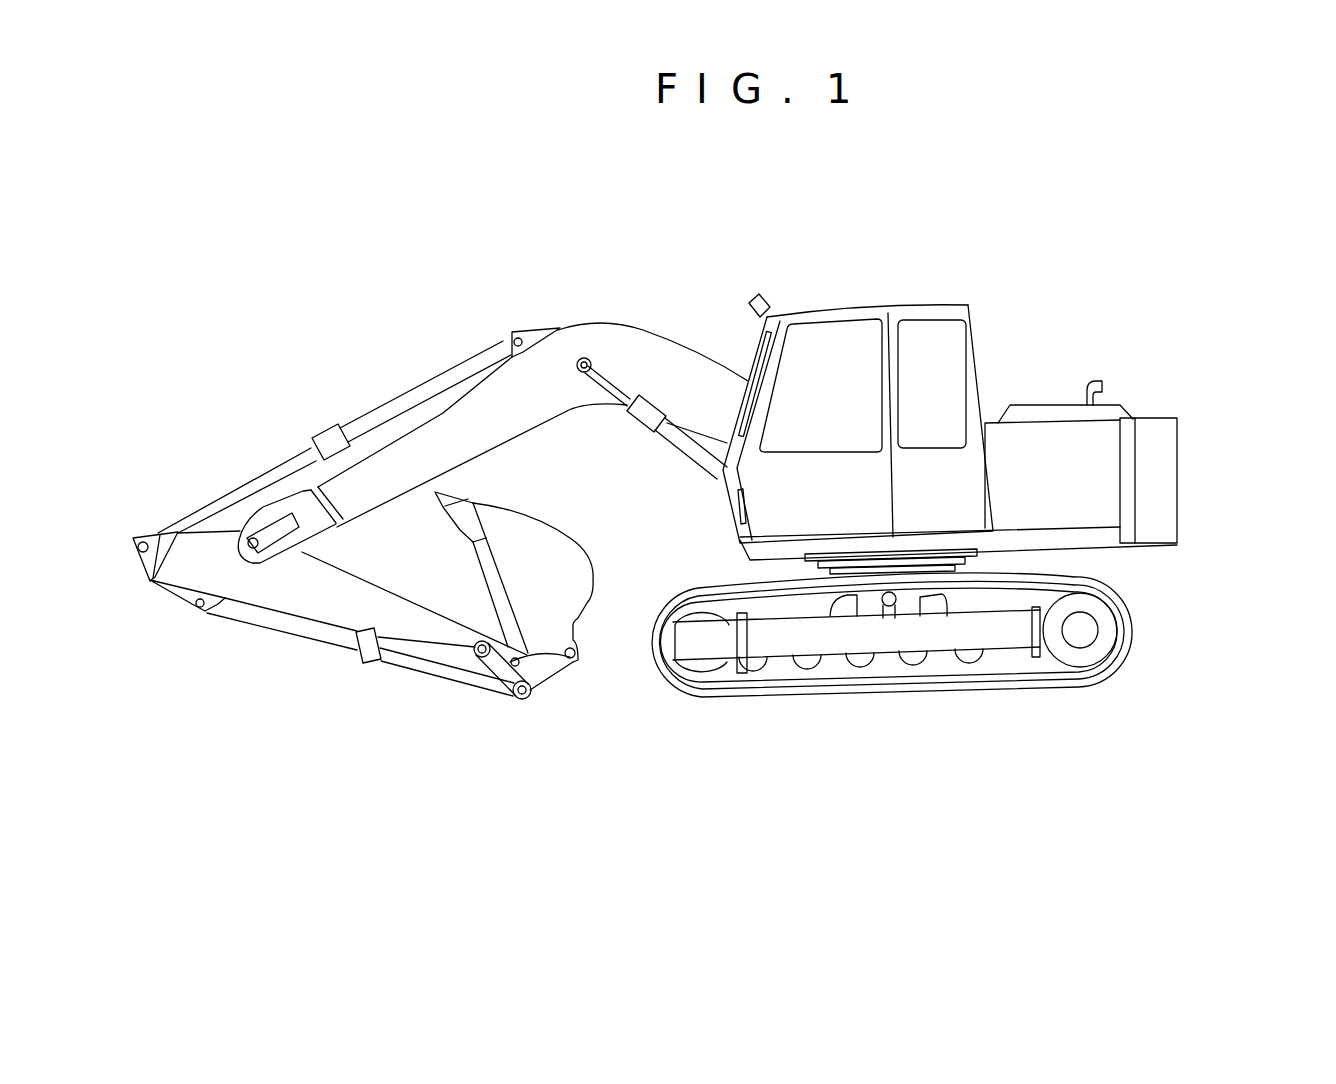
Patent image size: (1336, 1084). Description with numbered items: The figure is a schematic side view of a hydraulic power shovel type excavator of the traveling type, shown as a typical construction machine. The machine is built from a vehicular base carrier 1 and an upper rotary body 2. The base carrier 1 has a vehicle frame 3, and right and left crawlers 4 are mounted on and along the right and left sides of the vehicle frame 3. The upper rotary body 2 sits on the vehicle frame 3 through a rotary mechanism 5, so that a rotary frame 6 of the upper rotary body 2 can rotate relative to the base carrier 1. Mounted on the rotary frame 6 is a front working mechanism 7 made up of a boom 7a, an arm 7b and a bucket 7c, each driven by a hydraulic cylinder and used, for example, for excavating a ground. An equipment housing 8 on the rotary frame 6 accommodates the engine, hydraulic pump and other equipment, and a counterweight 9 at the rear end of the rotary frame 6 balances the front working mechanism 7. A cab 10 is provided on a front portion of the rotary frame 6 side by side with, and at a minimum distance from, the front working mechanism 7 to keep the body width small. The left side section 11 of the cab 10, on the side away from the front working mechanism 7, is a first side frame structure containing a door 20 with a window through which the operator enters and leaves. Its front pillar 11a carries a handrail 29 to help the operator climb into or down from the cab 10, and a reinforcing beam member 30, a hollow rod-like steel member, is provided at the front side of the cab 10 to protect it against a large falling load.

The vehicular base carrier 1 is at (963, 710).
The upper rotary body 2 is at (965, 427).
The vehicle frame 3 is at (798, 610).
The crawlers 4 is at (750, 693).
The rotary mechanism 5 is at (943, 570).
The rotary frame 6 is at (1073, 635).
The front working mechanism 7 is at (440, 491).
The boom 7a is at (445, 417).
The arm 7b is at (313, 602).
The bucket 7c is at (538, 580).
The equipment housing 8 is at (1073, 447).
The counterweight 9 is at (1158, 430).
The cab 10 is at (838, 326).
The left side section 11 is at (897, 305).
The front pillar 11a is at (745, 345).
The door 20 is at (848, 507).
The handrail 29 is at (730, 482).
The reinforcing beam member 30 is at (748, 298).